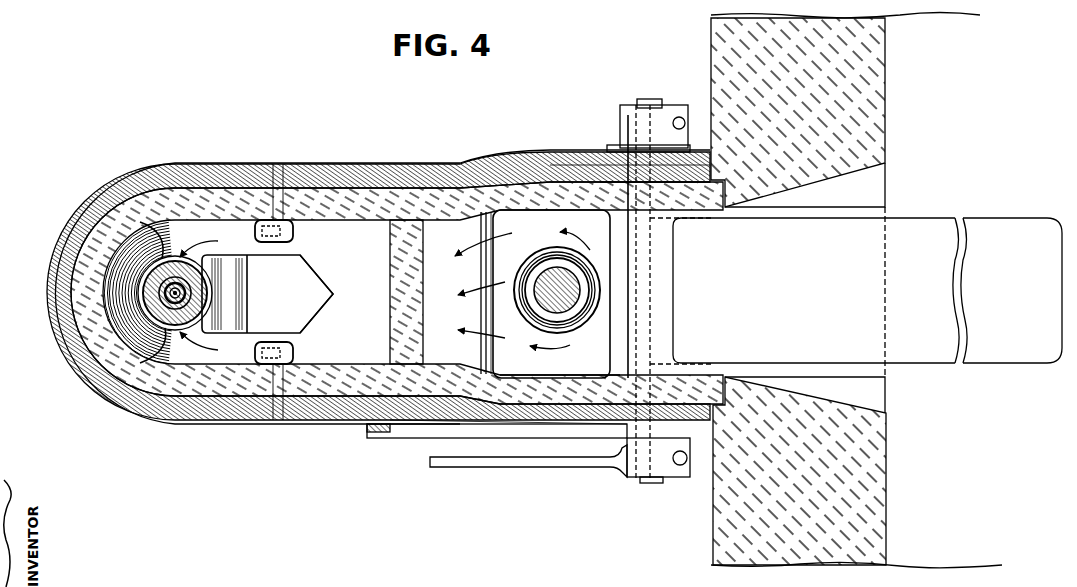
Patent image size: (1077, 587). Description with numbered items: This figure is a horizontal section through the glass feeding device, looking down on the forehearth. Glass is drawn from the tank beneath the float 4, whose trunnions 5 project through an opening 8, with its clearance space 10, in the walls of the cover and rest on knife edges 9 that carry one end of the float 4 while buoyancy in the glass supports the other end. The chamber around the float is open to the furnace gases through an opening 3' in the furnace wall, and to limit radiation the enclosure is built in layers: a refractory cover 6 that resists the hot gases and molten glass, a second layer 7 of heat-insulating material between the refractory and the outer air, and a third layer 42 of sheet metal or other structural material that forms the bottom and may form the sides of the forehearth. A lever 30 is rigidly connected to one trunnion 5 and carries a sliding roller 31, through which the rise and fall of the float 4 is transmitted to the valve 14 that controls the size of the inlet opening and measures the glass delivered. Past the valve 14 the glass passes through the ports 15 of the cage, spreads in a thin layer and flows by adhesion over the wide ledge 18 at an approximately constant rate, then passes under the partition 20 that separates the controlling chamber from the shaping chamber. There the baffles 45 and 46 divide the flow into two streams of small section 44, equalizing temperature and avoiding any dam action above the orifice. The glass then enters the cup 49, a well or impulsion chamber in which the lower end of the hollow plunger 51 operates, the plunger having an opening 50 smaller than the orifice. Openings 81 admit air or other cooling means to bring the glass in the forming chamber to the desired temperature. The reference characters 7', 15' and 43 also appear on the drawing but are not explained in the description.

The opening in the furnace wall 3' is at (856, 290).
The float 4 is at (867, 290).
The trunnions 5 is at (632, 140).
The cover 6 is at (575, 208).
The heat-insulating layer 7 is at (397, 269).
The lower casing wall 7' is at (560, 363).
The opening 8 is at (612, 160).
The knife edges 9 is at (648, 105).
The clearance space 10 is at (578, 170).
The valve 14 is at (545, 262).
The openings (ports) 15 is at (543, 284).
The bearing shaft 15' is at (568, 308).
The ledge (lip, apron) 18 is at (481, 310).
The partition 20 is at (390, 251).
The lever 30 is at (536, 467).
The sliding roller 31 is at (622, 436).
The structural layer 42 is at (367, 164).
The slide member 43 is at (330, 294).
The streams of small section 44 is at (190, 297).
The baffle 45 is at (267, 294).
The baffle 46 is at (115, 280).
The cup 49 is at (162, 300).
The plunger opening 50 is at (166, 293).
The plunger 51 is at (200, 279).
The cooling openings 81 is at (293, 232).